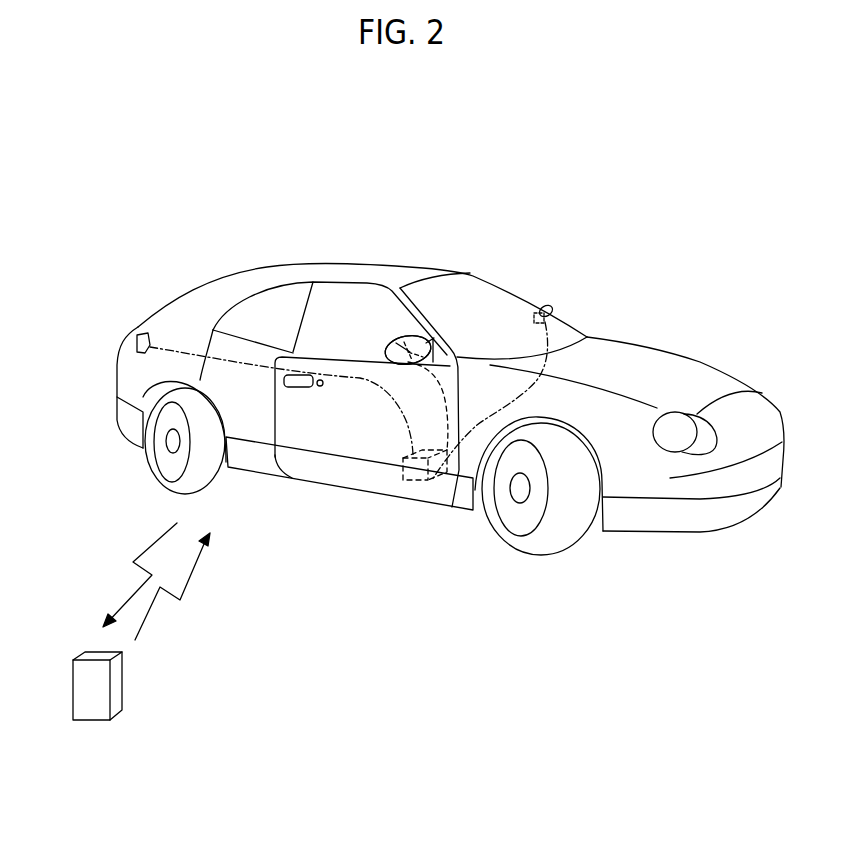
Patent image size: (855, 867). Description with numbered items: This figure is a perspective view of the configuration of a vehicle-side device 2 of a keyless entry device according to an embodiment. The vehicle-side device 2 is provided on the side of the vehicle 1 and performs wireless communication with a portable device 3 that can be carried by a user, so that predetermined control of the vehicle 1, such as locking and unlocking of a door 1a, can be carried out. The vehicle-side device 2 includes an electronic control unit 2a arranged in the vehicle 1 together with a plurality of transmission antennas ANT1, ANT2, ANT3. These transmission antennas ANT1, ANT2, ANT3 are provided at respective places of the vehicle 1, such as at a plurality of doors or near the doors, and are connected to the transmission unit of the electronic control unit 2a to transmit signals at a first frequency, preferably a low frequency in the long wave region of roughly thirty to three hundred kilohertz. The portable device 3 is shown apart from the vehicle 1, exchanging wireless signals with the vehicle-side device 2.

The vehicle 1 is at (390, 267).
The door 1a is at (320, 438).
The vehicle-side device 2 is at (410, 487).
The electronic control unit 2a is at (430, 481).
The portable device 3 is at (125, 683).
The transmission antenna ANT1 is at (550, 310).
The transmission antenna ANT2 is at (387, 340).
The transmission antenna ANT3 is at (138, 327).